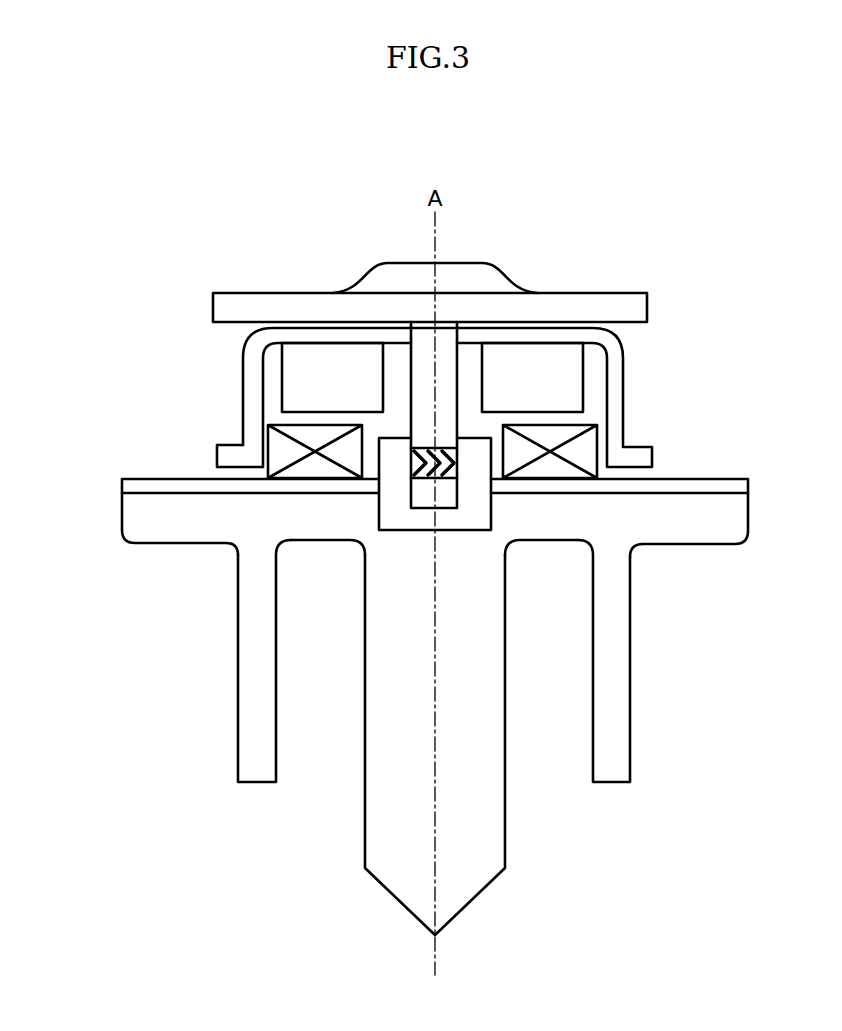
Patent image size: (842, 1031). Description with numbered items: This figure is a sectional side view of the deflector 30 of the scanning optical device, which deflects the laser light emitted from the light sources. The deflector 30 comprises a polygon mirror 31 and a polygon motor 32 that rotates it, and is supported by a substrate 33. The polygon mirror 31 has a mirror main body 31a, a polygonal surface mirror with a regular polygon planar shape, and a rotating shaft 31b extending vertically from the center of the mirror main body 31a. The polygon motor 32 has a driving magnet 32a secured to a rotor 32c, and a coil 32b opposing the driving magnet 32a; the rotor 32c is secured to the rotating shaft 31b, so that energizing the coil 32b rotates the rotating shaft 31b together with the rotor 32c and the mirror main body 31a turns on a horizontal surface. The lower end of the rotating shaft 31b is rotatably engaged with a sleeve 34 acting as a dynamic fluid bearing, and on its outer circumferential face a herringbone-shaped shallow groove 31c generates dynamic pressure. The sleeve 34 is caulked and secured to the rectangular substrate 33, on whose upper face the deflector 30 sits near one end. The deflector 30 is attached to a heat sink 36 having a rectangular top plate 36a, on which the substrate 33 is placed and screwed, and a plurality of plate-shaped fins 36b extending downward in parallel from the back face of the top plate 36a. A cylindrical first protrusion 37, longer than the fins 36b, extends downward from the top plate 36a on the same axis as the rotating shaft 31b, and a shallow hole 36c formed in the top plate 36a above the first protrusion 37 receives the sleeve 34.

The deflector 30 is at (131, 247).
The polygon mirror 31 is at (328, 224).
The mirror main body 31a is at (253, 302).
The rotating shaft 31b is at (418, 357).
The herringbone-shaped shallow groove 31c is at (412, 467).
The polygon motor 32 is at (122, 330).
The driving magnet 32a is at (290, 357).
The coil 32b is at (265, 427).
The rotor 32c is at (242, 453).
The substrate 33 is at (717, 486).
The sleeve 34 is at (407, 531).
The heat sink 36 is at (120, 542).
The top plate 36a is at (200, 528).
The fins 36b is at (263, 664).
The shallow hole 36c is at (487, 512).
The first protrusion 37 is at (392, 855).